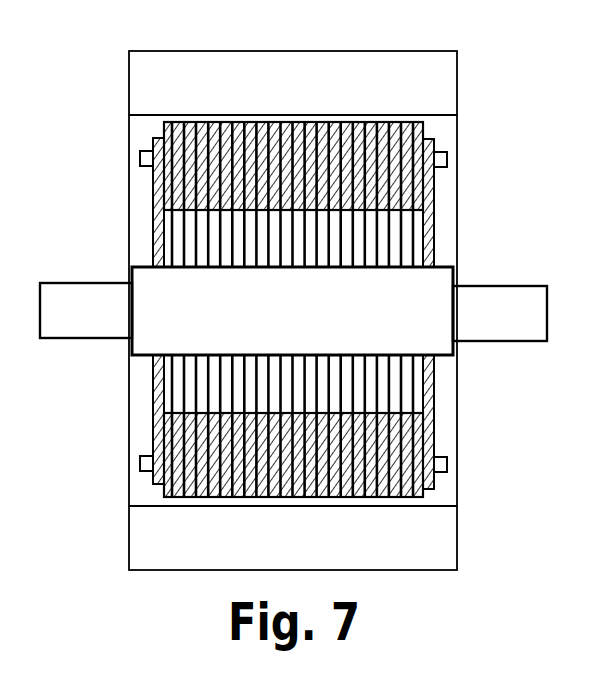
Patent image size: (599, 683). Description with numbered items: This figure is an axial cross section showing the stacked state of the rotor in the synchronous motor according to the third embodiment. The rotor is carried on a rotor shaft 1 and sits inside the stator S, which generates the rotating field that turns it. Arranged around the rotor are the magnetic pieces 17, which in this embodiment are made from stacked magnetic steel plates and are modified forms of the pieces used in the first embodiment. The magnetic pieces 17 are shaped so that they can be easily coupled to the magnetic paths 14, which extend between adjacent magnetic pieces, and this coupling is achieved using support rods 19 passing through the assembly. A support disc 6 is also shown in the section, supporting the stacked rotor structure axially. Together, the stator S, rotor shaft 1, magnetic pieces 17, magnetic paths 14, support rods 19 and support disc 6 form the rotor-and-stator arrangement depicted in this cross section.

The stator S is at (422, 60).
The rotor shaft 1 is at (533, 292).
The support disc 6 is at (435, 200).
The magnetic paths 14 is at (172, 232).
The magnetic pieces 17 is at (176, 121).
The support rods 19 is at (450, 157).